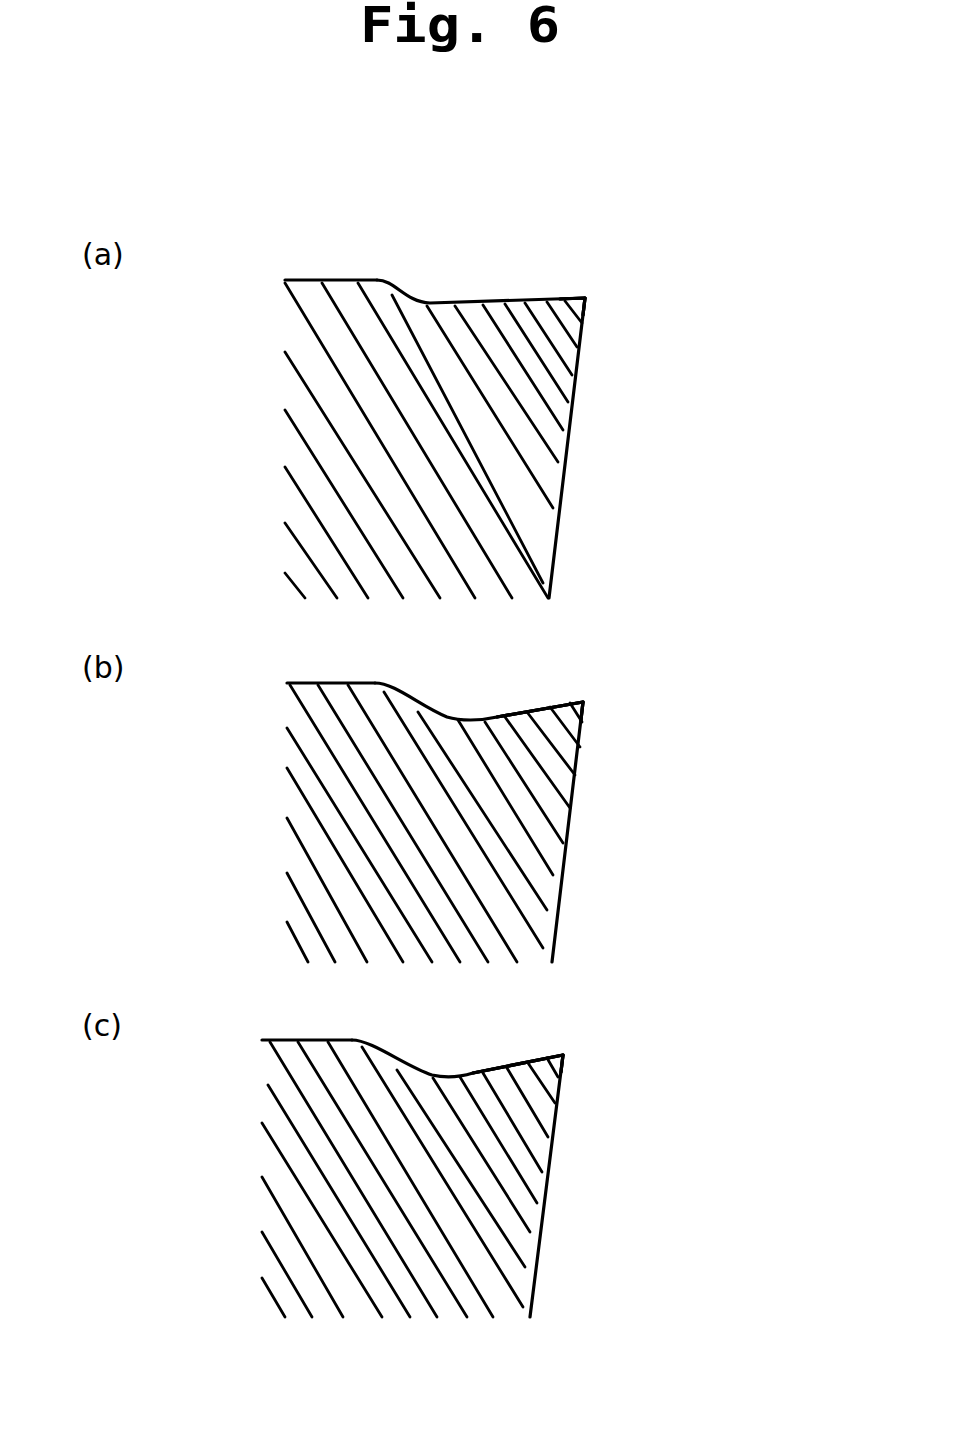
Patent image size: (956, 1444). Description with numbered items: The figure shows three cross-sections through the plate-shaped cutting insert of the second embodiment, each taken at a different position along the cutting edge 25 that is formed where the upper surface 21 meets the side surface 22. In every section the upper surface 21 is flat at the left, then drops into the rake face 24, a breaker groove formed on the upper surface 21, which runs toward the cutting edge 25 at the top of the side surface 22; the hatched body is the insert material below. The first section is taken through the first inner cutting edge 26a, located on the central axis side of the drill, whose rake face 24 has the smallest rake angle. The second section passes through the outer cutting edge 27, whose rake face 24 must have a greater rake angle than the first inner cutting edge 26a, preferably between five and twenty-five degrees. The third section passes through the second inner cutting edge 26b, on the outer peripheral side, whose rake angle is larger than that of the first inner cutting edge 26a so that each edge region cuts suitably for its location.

The upper surface 21 is at (333, 280).
The side surface 22 is at (570, 427).
The rake face 24 is at (482, 275).
The cutting edge 25 is at (641, 655).
The first inner cutting edge 26a is at (585, 298).
The outer cutting edge 27 is at (583, 702).
The second inner cutting edge 26b is at (563, 1055).